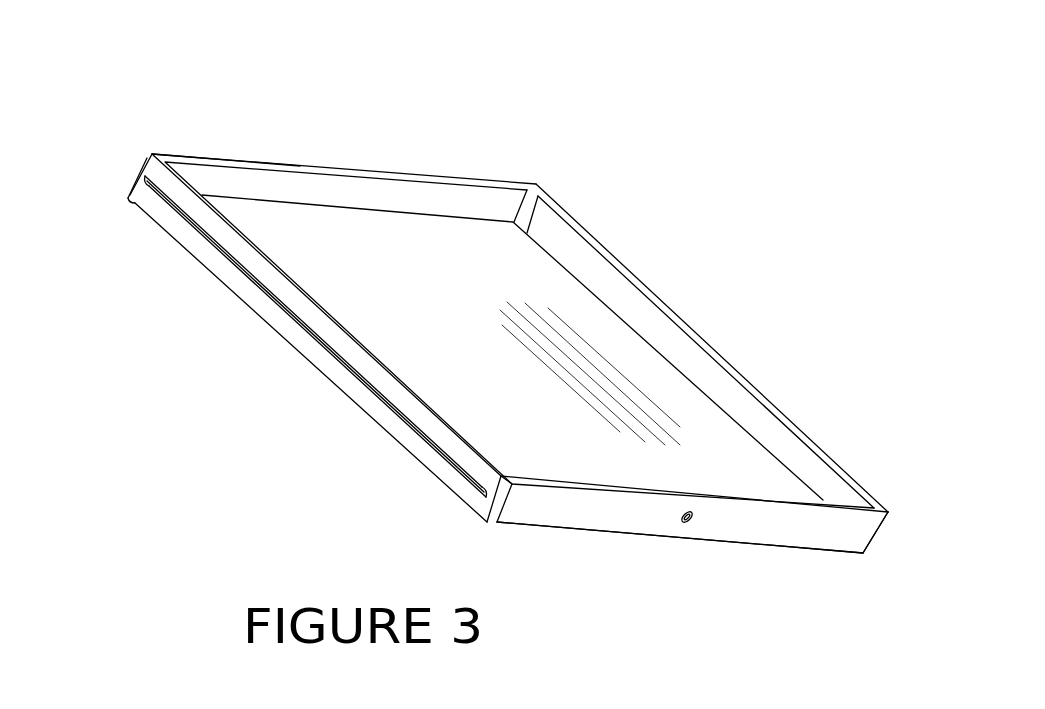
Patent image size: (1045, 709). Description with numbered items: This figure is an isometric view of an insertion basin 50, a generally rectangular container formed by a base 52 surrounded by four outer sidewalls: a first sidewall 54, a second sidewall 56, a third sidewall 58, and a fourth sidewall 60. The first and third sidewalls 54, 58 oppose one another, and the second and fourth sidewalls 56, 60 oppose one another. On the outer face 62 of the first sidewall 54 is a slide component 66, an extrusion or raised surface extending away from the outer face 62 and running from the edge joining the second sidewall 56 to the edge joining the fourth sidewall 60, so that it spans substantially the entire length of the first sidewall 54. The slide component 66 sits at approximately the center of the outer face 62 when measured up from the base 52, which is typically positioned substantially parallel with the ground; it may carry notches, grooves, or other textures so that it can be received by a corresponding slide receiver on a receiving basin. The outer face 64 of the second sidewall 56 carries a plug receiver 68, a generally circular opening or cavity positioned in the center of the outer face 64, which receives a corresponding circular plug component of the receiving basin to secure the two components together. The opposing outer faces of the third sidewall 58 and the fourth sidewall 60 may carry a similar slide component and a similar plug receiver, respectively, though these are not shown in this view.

The insertion basin 50 is at (707, 215).
The base 52 is at (483, 256).
The first sidewall 54 is at (162, 295).
The second sidewall 56 is at (830, 585).
The third sidewall 58 is at (693, 332).
The fourth sidewall 60 is at (260, 135).
The outer face of the first sidewall 62 is at (425, 457).
The outer face of the second sidewall 64 is at (562, 515).
The slide component 66 is at (335, 358).
The plug receiver 68 is at (695, 524).